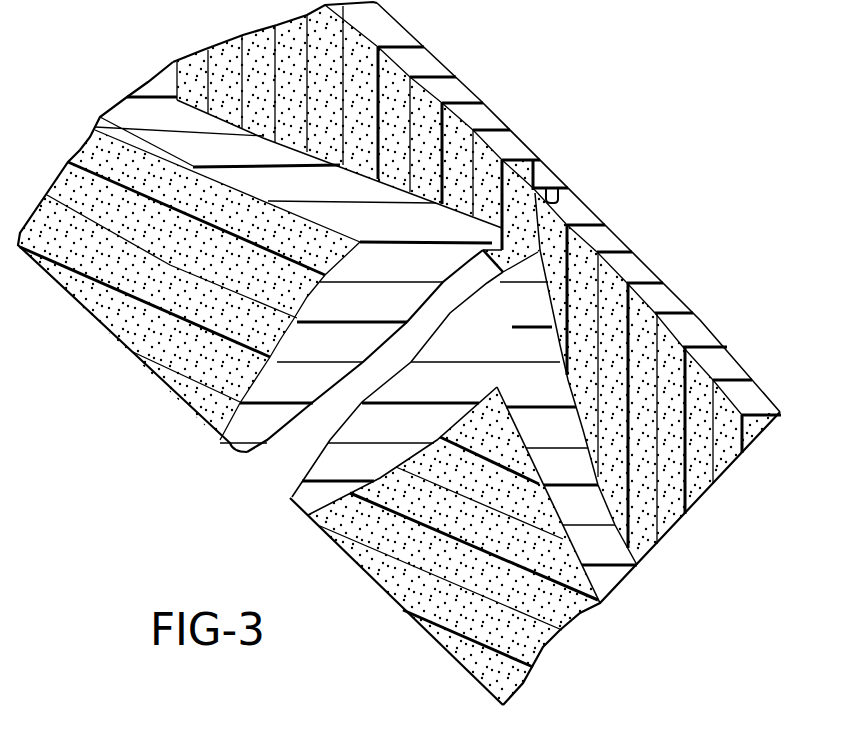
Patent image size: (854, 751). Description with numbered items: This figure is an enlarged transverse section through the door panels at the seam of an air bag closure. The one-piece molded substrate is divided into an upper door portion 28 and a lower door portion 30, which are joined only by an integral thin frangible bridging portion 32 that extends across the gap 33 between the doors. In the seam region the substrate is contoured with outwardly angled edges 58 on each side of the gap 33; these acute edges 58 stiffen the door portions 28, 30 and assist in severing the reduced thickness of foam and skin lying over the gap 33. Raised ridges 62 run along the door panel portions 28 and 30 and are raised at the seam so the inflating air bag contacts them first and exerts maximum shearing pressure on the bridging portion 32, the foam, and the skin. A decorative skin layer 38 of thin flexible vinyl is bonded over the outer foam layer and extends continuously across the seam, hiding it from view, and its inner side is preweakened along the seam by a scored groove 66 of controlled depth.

The upper door portion 28 is at (173, 62).
The lower door portion 30 is at (693, 490).
The bridging portion 32 is at (470, 262).
The gap 33 is at (501, 252).
The decorative skin layer 38 is at (733, 288).
The edge 58 is at (497, 228).
The ridge 62 is at (230, 443).
The groove 66 is at (562, 193).